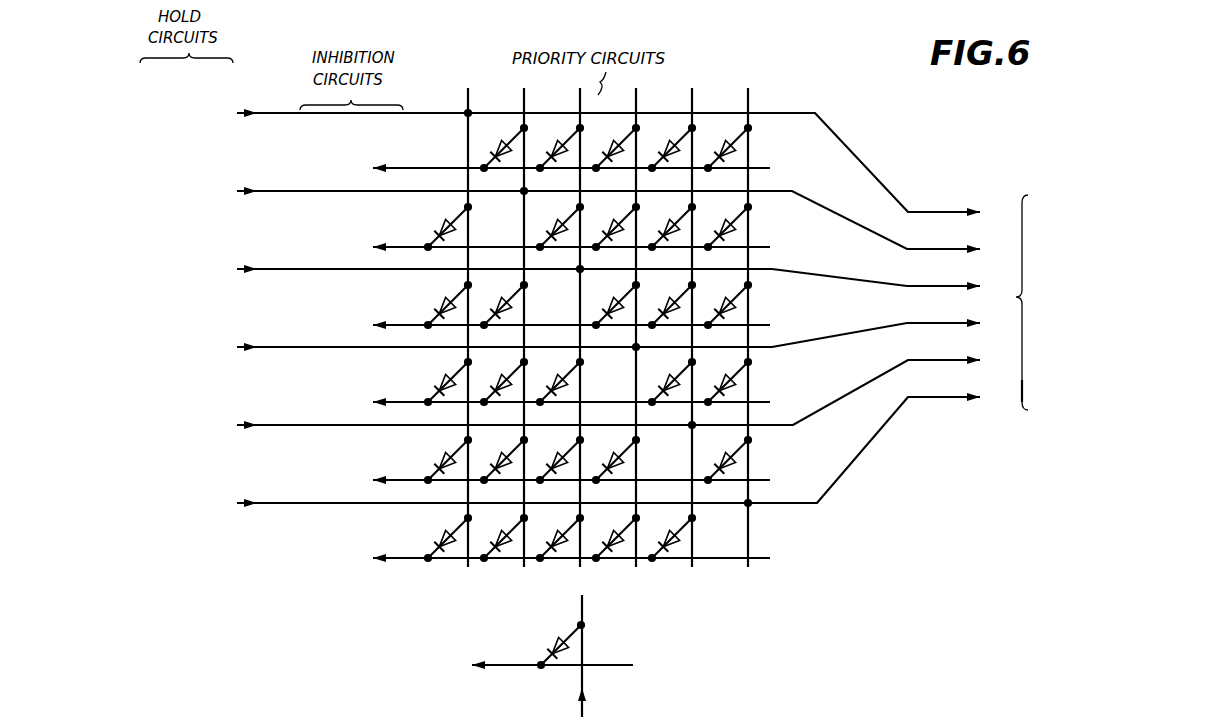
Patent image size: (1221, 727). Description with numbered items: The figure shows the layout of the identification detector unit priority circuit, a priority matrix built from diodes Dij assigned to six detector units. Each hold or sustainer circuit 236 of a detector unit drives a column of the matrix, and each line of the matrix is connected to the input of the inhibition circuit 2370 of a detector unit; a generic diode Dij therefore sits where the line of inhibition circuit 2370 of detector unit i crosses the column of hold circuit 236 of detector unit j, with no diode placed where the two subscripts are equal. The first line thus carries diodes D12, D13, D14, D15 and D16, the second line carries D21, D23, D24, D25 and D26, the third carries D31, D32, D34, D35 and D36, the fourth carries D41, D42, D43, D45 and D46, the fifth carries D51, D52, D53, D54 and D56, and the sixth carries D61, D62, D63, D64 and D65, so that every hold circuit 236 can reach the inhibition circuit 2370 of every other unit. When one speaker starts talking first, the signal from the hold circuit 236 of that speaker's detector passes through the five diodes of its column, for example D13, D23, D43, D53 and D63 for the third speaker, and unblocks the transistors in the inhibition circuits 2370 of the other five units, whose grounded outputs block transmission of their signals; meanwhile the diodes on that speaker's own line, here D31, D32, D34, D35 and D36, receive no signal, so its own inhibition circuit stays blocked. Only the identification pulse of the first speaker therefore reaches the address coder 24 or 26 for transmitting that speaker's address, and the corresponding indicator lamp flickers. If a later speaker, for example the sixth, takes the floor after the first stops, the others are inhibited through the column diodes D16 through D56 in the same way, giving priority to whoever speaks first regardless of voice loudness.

The hold circuit 236 is at (240, 503).
The inhibition circuit 2370 is at (387, 164).
The address coder 24 is at (1071, 292).
The register/output R1-R6 destination (fig. 3A) 26 is at (1106, 341).
The diode D12 is at (507, 144).
The diode D13 is at (563, 144).
The diode D14 is at (619, 144).
The diode D15 is at (675, 144).
The diode D16 is at (731, 144).
The diode D21 is at (451, 223).
The diode D23 is at (563, 223).
The diode D24 is at (619, 223).
The diode D25 is at (675, 223).
The diode D26 is at (731, 223).
The diode D31 is at (451, 301).
The diode D32 is at (507, 301).
The diode D34 is at (619, 301).
The diode D35 is at (675, 301).
The diode D36 is at (731, 301).
The diode D41 is at (451, 378).
The diode D42 is at (507, 378).
The diode D43 is at (563, 378).
The diode D45 is at (675, 378).
The diode D46 is at (731, 378).
The diode D51 is at (451, 456).
The diode D52 is at (507, 456).
The diode D53 is at (563, 456).
The diode D54 is at (619, 456).
The diode D56 is at (731, 456).
The diode D61 is at (451, 534).
The diode D62 is at (507, 534).
The diode D63 is at (563, 534).
The diode D64 is at (619, 534).
The diode D65 is at (675, 534).
The diode Dij is at (560, 628).